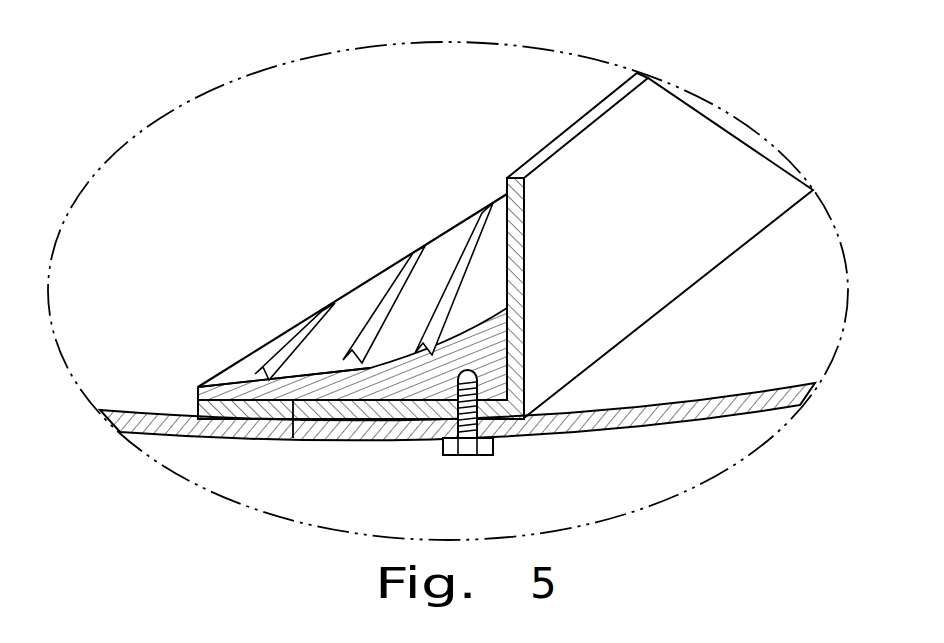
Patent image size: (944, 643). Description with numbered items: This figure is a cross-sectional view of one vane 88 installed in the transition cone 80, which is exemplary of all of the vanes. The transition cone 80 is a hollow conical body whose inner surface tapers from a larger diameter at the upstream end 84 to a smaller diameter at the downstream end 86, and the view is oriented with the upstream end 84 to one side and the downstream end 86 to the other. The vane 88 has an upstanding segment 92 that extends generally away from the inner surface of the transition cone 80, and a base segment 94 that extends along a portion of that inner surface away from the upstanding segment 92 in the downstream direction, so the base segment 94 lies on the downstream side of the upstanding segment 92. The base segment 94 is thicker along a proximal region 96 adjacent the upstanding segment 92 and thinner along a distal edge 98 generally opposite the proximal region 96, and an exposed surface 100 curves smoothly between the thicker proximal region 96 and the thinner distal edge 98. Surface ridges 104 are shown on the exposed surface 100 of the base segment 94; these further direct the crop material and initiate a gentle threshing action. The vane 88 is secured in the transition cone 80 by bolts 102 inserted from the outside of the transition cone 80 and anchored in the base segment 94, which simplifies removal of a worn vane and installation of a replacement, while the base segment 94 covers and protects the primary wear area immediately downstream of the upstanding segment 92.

The transition cone 80 is at (728, 418).
The upstream end 84 is at (830, 303).
The downstream end 86 is at (66, 281).
The vane 88 is at (724, 76).
The upstanding segment 92 is at (688, 171).
The base segment 94 is at (293, 438).
The proximal region 96 is at (495, 348).
The distal edge 98 is at (197, 392).
The exposed surface 100 is at (340, 327).
The bolt 102 is at (450, 454).
The surface ridge 104 is at (470, 228).